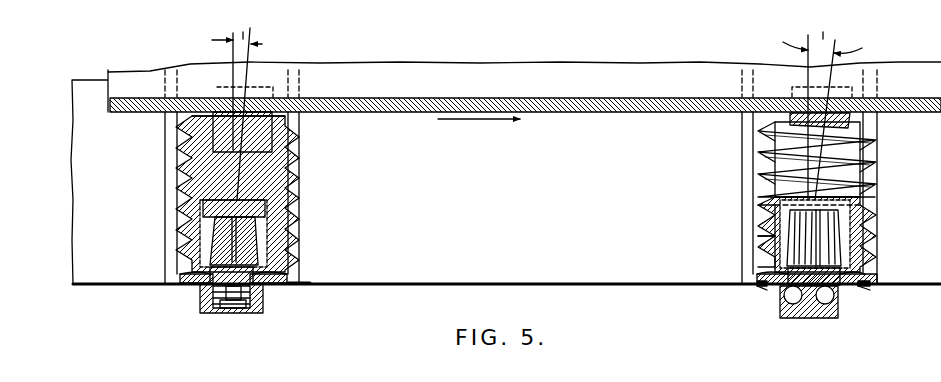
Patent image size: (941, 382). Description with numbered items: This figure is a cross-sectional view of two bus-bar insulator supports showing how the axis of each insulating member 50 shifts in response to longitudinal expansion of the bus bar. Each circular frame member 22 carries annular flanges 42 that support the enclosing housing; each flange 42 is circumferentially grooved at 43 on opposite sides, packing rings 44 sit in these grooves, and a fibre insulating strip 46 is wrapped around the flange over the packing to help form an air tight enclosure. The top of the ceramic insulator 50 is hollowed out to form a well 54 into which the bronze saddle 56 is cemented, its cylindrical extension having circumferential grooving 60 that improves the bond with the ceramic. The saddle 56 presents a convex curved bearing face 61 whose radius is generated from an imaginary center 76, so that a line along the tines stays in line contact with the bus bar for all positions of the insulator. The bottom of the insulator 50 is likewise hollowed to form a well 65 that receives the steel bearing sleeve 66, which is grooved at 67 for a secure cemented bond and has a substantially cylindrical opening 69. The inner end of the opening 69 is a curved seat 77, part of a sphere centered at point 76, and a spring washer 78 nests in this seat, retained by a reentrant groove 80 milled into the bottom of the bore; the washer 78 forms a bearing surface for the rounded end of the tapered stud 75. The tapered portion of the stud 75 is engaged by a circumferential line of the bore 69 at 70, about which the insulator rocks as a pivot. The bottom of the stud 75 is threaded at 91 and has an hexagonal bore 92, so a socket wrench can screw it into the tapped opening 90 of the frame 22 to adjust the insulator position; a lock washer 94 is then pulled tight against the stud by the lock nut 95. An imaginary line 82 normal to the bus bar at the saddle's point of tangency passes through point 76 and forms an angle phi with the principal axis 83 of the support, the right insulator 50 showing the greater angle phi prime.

The circular frame member 22 is at (200, 313).
The annular flange 42 is at (288, 273).
The circumferential groove 43 is at (760, 288).
The packing ring 44 is at (761, 280).
The fibre insulating strip 46 is at (301, 282).
The insulating member 50 is at (300, 177).
The well 54 is at (272, 133).
The bronze saddle 56 is at (218, 82).
The circumferential grooving 60 is at (300, 150).
The convex curved bearing face 61 is at (245, 110).
The well 65 is at (300, 197).
The steel bearing sleeve 66 is at (766, 208).
The circumferential grooving 67 is at (766, 242).
The cylindrical opening 69 is at (252, 232).
The circumferential line of the bore 70 is at (186, 275).
The tapered stud 75 is at (293, 244).
The imaginary center 76 is at (200, 246).
The curved seat 77 is at (874, 194).
The spring washer 78 is at (866, 213).
The reentrant groove 80 is at (300, 209).
The imaginary line 82 is at (498, 44).
The principal axis 83 is at (567, 49).
The tapped opening 90 is at (246, 308).
The threaded end 91 is at (263, 295).
The hexagonal bore 92 is at (233, 300).
The lock washer 94 is at (210, 295).
The lock nut 95 is at (207, 308).